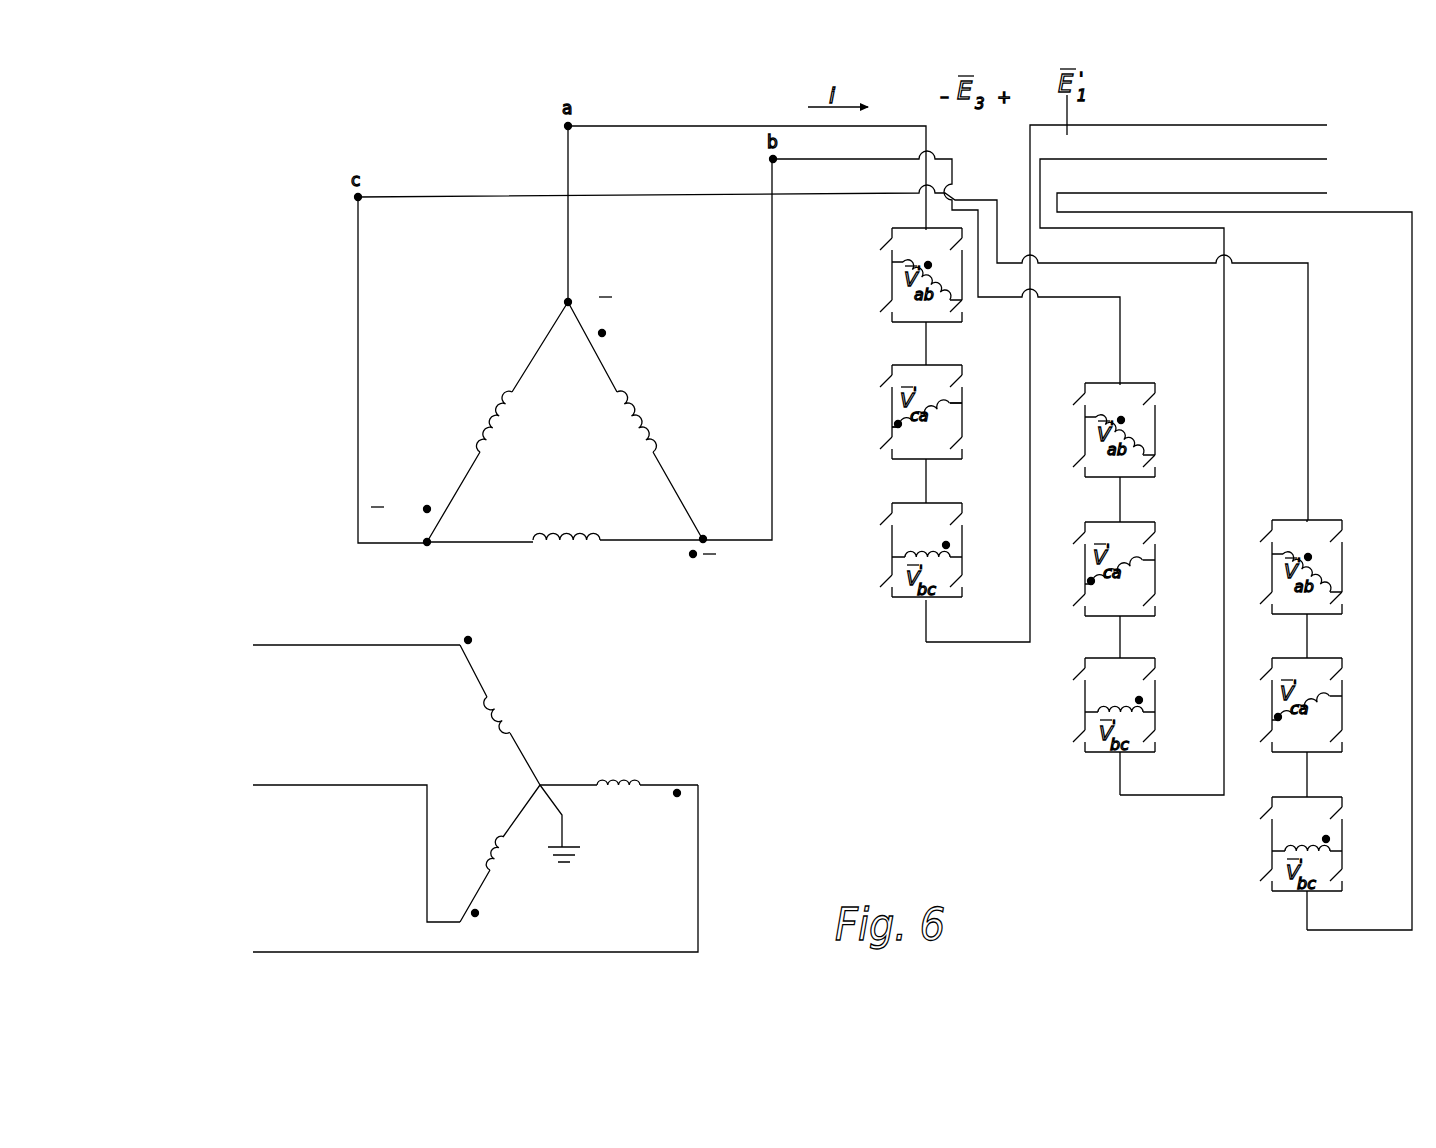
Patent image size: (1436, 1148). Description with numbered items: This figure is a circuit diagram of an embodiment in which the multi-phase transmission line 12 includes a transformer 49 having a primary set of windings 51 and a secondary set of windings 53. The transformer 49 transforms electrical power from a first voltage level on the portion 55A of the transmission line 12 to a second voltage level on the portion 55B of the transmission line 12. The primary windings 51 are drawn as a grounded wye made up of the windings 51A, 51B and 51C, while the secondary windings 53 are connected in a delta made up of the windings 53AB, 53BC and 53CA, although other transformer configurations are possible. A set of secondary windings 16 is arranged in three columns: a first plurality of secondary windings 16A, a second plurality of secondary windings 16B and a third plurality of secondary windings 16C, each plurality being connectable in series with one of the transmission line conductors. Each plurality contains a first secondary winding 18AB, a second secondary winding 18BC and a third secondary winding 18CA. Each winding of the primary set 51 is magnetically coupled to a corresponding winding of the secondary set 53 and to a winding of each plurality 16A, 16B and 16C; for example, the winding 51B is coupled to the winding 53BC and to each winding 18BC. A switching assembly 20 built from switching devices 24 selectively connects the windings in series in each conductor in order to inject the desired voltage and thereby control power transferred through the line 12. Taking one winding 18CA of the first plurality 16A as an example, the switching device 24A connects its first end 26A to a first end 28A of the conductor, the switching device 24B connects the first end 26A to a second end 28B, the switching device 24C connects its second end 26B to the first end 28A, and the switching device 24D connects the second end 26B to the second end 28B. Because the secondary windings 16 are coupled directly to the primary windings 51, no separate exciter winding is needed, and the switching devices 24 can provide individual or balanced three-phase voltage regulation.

The multi-phase transmission line 12 is at (1302, 108).
The set of secondary windings 16 is at (830, 243).
The first plurality of secondary windings 16A is at (906, 652).
The second plurality of secondary windings 16B is at (1087, 762).
The third plurality of secondary windings 16C is at (1276, 906).
The first secondary winding 18AB is at (954, 300).
The second secondary winding 18BC is at (905, 553).
The third secondary winding 18CA is at (905, 460).
The switching assembly 20 is at (831, 304).
The switching devices 24 is at (881, 242).
The switching device 24A is at (878, 377).
The switching device 24B is at (876, 442).
The switching device 24C is at (964, 377).
The switching device 24D is at (962, 451).
The first end of the secondary winding 26A is at (892, 435).
The second end of the secondary winding 26B is at (958, 405).
The first end of the transmission line conductor 28A is at (926, 338).
The second end of the transmission line conductor 28B is at (927, 478).
The transformer 49 is at (283, 486).
The primary set of windings 51 is at (374, 729).
The primary winding 51A is at (476, 706).
The primary winding 51B is at (613, 794).
The primary winding 51C is at (497, 844).
The secondary set of windings 53 is at (454, 297).
The secondary winding 53AB is at (638, 418).
The secondary winding 53BC is at (642, 543).
The secondary winding 53CA is at (483, 424).
The portion of the transmission line 55A is at (296, 638).
The portion of the transmission line 55B is at (1187, 110).